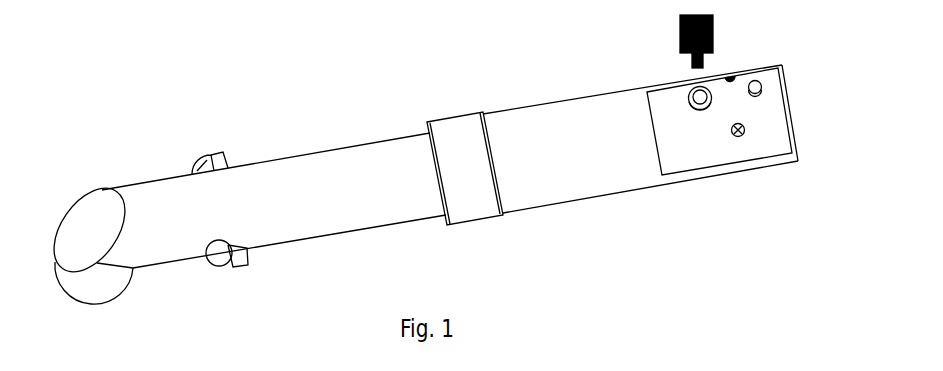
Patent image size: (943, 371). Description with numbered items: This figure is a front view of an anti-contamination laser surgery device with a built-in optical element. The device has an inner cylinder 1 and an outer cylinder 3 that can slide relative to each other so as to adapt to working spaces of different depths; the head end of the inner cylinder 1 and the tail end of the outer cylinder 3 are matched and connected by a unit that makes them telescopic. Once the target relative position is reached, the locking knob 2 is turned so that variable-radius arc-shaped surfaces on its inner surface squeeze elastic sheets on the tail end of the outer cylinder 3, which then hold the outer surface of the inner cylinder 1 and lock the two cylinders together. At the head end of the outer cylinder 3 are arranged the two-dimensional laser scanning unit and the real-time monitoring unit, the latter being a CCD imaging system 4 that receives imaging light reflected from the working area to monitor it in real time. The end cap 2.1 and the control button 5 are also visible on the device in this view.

The inner cylinder 1 is at (332, 180).
The locking knob 2 is at (458, 135).
The end cap 2.1 is at (93, 207).
The outer cylinder 3 is at (560, 185).
The CCD imaging system 4 is at (680, 33).
The switch button 5 is at (755, 81).